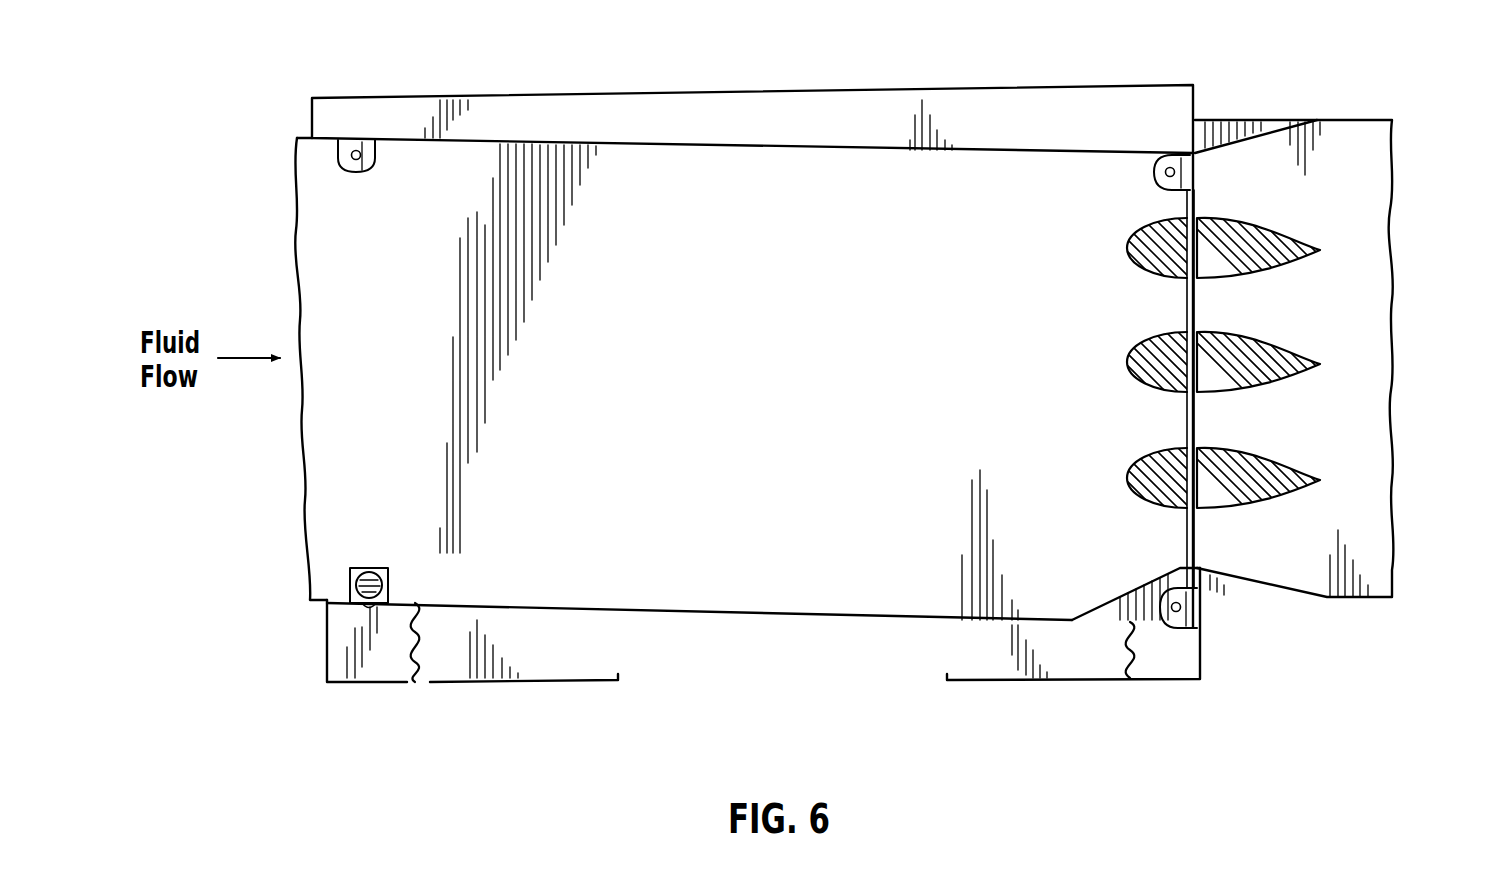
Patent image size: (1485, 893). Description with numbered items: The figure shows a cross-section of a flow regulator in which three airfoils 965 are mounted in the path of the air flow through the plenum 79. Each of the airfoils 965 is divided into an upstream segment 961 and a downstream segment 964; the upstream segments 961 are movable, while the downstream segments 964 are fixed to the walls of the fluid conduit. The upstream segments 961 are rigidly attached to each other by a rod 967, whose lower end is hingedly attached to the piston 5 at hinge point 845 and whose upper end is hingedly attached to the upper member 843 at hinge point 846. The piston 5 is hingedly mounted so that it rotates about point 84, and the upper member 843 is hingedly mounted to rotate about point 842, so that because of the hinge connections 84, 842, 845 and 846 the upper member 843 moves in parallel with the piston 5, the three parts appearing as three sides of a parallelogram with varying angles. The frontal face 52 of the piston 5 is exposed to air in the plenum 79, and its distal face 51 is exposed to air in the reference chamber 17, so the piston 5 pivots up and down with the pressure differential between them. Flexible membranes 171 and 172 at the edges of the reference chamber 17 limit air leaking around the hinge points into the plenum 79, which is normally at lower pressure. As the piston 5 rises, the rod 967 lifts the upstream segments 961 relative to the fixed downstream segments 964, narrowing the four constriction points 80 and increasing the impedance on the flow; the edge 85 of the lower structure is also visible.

The piston 5 is at (617, 607).
The reference chamber 17 is at (744, 666).
The distal face 51 is at (840, 620).
The frontal face 52 is at (860, 618).
The plenum 79 is at (734, 359).
The constriction points 80 is at (1257, 205).
The hinge point 84 is at (357, 585).
The lower bar edge 85 is at (652, 662).
The flexible membrane 171 is at (1145, 680).
The flexible membrane 172 is at (410, 685).
The hinge point 842 is at (356, 152).
The upper member 843 is at (760, 145).
The hinge point 845 is at (1200, 612).
The hinge point 846 is at (1165, 172).
The upstream segments 961 is at (1130, 243).
The downstream segments 964 is at (1320, 236).
The airfoils 965 is at (1122, 277).
The rod 967 is at (1187, 422).